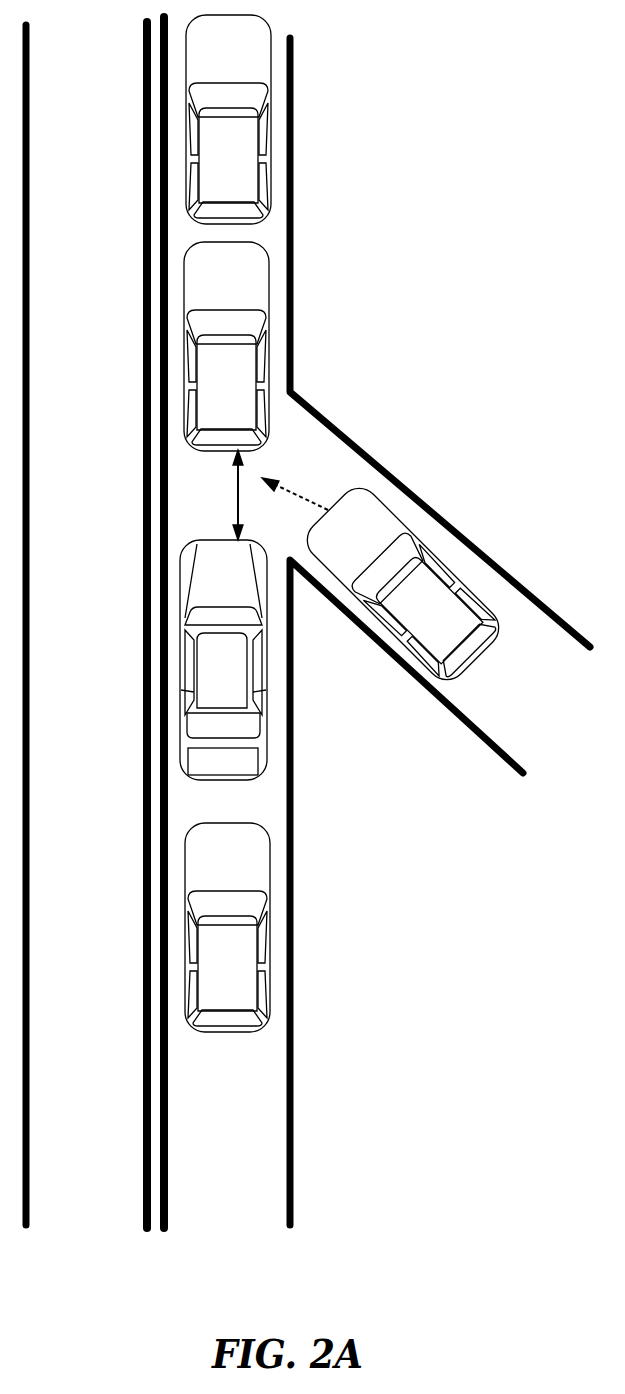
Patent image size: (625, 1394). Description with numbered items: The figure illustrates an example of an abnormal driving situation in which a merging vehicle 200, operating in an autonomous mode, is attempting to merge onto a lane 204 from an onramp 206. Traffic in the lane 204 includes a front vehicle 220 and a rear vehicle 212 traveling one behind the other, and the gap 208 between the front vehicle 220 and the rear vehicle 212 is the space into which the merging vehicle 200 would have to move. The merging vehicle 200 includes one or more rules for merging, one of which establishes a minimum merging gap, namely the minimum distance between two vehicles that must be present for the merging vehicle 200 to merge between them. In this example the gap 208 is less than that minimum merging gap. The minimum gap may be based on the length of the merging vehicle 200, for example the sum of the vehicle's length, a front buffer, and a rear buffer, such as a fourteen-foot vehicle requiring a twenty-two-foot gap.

The merging vehicle 200 is at (384, 583).
The lane 204 is at (195, 622).
The onramp 206 is at (440, 631).
The gap 208 is at (237, 482).
The rear vehicle 212 is at (223, 660).
The front vehicle 220 is at (226, 346).